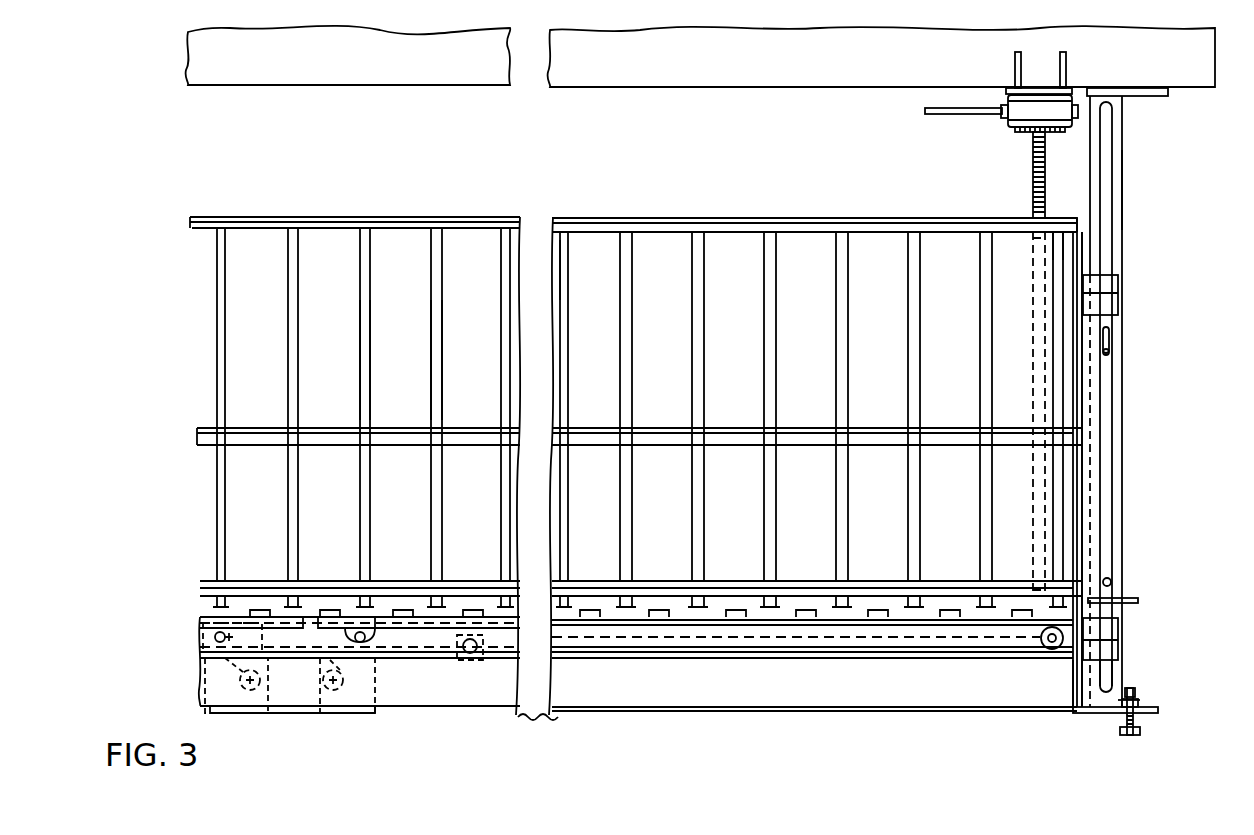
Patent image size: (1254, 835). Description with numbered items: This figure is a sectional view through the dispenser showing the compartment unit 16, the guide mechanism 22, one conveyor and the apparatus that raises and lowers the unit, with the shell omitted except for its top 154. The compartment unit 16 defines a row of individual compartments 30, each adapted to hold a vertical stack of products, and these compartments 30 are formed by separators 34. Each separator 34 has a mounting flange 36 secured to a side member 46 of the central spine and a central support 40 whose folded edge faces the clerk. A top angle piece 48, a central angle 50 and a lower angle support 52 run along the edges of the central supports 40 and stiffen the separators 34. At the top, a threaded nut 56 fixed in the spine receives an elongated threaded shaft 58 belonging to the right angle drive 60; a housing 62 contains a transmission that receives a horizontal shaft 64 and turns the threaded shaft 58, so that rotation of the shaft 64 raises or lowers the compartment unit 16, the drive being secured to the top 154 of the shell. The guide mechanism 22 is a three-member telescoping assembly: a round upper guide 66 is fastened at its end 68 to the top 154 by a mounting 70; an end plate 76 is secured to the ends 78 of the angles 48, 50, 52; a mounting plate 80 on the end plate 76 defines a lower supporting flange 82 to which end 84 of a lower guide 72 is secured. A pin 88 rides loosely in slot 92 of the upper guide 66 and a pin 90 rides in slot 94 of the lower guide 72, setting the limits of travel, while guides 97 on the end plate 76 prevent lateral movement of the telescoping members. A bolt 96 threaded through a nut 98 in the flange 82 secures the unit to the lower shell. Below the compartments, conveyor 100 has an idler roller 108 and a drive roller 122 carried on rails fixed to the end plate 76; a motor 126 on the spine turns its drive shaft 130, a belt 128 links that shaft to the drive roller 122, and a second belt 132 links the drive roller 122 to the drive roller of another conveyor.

The top of shell 154 is at (810, 75).
The compartment unit 16 is at (716, 208).
The side member 46 is at (590, 250).
The separator 34 is at (230, 250).
The compartment 30 is at (466, 255).
The top angle piece 48 is at (325, 217).
The mounting flange 36 is at (372, 362).
The central support 40 is at (444, 352).
The central angle 50 is at (738, 430).
The lower angle support 52 is at (740, 581).
The second belt 132 is at (308, 617).
The drive roller 122 is at (366, 630).
The belt 128 is at (365, 660).
The motor 126 is at (378, 700).
The drive shaft 130 is at (352, 713).
The conveyor 100 is at (798, 655).
The idler roller 108 is at (1046, 645).
The shaft 64 is at (962, 114).
The right angle drive 60 is at (1010, 137).
The housing 62 is at (1068, 120).
The ends of angles 78 is at (1072, 218).
The mounting 70 is at (1150, 96).
The end of guide 68 is at (1123, 100).
The guide 66 is at (1123, 190).
The slot 92 is at (1112, 228).
The guide 97 is at (1118, 282).
The pin 88 is at (1110, 345).
The guide mechanism 22 is at (1106, 421).
The threaded nut 56 is at (1030, 258).
The threaded shaft 58 is at (1043, 362).
The end plate 76 is at (1085, 488).
The pin 90 is at (1110, 582).
The lower guide 72 is at (1115, 668).
The slot 94 is at (1112, 682).
The lower supporting flange 82 is at (1140, 708).
The bolt 96 is at (1140, 722).
The mounting plate 80 is at (1073, 672).
The end of lower guide 84 is at (1085, 690).
The nut 98 is at (1125, 705).